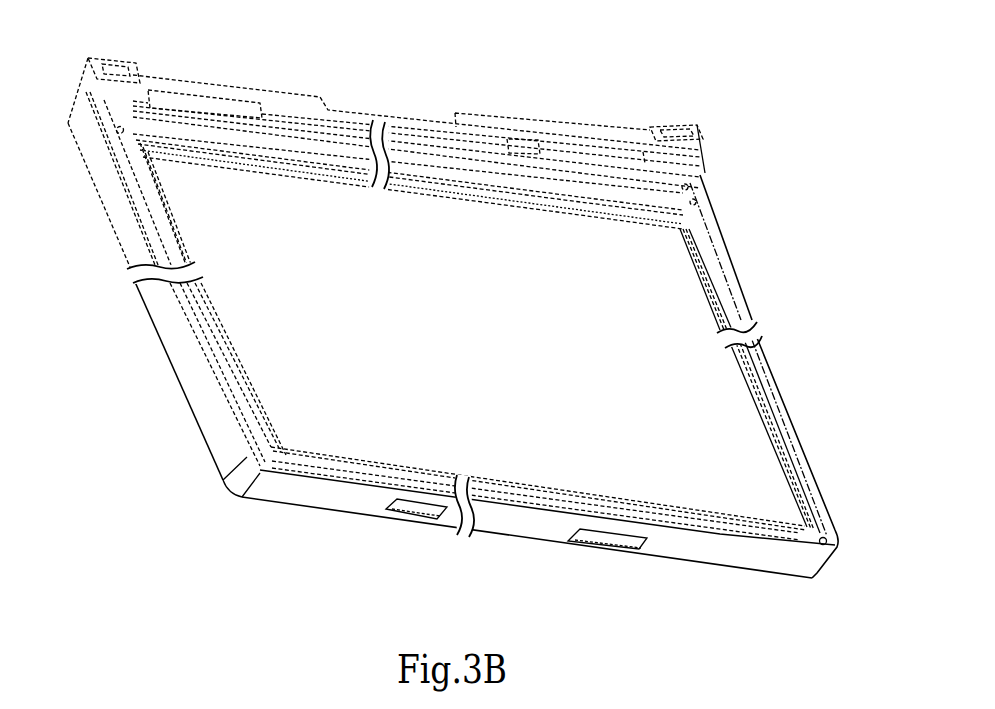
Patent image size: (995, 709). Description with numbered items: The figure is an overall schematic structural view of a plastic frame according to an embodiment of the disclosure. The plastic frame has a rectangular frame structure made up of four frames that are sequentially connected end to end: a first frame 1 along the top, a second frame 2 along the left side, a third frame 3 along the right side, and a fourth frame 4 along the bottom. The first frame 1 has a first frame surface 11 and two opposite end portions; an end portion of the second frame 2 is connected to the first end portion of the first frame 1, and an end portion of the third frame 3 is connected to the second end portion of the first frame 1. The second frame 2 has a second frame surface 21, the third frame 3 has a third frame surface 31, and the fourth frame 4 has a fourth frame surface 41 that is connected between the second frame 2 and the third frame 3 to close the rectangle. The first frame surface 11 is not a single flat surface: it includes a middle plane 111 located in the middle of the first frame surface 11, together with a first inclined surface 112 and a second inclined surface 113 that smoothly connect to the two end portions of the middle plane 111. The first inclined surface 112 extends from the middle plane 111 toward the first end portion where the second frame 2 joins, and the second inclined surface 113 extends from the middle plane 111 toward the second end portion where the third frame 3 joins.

The first frame 1 is at (386, 163).
The first frame surface 11 is at (416, 203).
The middle plane 111 is at (420, 152).
The first inclined surface 112 is at (212, 127).
The second inclined surface 113 is at (193, 238).
The second frame 2 is at (191, 299).
The second frame surface 21 is at (223, 385).
The third frame 3 is at (758, 376).
The third frame surface 31 is at (777, 408).
The fourth frame 4 is at (538, 504).
The fourth frame surface 41 is at (494, 498).